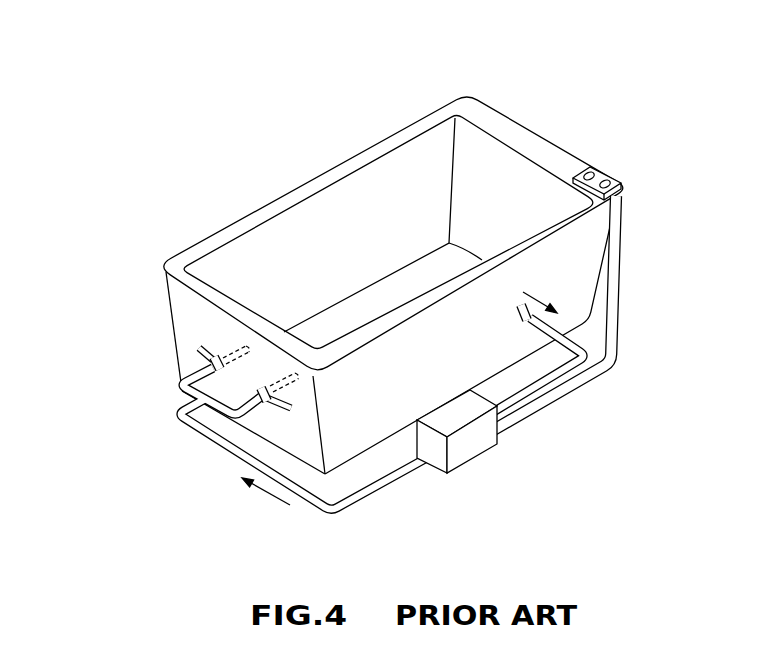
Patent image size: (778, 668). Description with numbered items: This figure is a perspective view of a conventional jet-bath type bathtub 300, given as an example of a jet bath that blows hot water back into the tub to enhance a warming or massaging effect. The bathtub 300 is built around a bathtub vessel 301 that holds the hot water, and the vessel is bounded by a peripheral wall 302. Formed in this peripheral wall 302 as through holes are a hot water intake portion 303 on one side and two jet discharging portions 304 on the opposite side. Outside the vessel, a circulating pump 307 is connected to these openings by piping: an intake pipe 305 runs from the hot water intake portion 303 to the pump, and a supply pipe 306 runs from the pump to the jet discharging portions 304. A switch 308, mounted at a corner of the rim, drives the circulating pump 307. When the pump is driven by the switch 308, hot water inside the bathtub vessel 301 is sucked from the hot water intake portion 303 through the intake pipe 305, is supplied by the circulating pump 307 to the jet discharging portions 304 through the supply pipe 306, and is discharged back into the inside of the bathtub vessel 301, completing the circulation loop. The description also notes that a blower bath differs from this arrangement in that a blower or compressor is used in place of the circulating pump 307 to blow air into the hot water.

The bathtub 300 is at (538, 104).
The bathtub vessel 301 is at (350, 160).
The peripheral wall 302 is at (193, 327).
The hot water intake portion 303 is at (512, 310).
The jet discharging portions 304 is at (221, 355).
The intake pipe 305 is at (548, 382).
The supply pipe 306 is at (217, 441).
The circulating pump 307 is at (472, 450).
The switch 308 is at (598, 167).